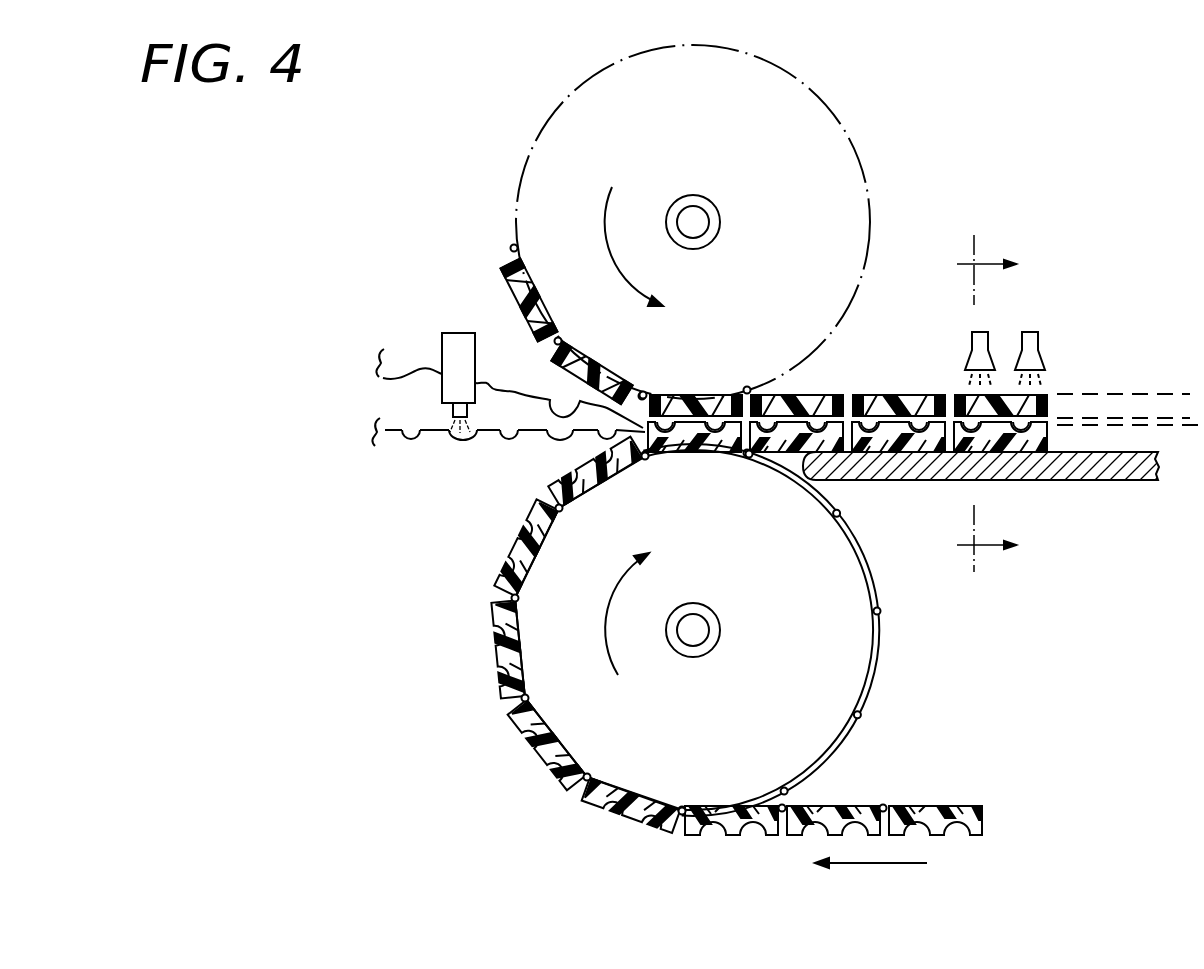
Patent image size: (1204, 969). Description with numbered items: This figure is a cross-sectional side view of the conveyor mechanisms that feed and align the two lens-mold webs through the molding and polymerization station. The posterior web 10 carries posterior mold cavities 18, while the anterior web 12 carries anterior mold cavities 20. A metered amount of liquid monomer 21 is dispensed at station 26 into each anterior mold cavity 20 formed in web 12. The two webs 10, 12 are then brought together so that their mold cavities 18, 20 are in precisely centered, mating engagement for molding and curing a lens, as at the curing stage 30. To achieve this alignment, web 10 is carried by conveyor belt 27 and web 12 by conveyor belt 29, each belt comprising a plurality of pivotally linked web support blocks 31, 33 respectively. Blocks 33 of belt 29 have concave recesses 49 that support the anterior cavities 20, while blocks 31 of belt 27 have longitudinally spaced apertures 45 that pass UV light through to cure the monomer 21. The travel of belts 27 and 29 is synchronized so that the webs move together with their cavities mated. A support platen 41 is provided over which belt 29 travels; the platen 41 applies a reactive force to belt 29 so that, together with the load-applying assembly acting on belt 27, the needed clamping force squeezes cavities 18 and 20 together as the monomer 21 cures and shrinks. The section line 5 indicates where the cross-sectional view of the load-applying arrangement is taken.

The section line 5- 5 is at (980, 404).
The posterior web 10 is at (385, 353).
The anterior web 12 is at (388, 430).
The posterior mold cavities 18 is at (397, 377).
The anterior mold cavities 20 is at (411, 439).
The liquid monomer 21 is at (543, 430).
The dispensing station 26 is at (455, 333).
The conveyor belt 27 is at (593, 352).
The conveyor belt 29 is at (604, 490).
The molding and curing station 30 is at (1075, 240).
The web support blocks 31 is at (692, 395).
The web support blocks 33 is at (677, 453).
The support platen 41 is at (915, 474).
The apertures 45 is at (972, 397).
The concave recesses 49 is at (538, 510).